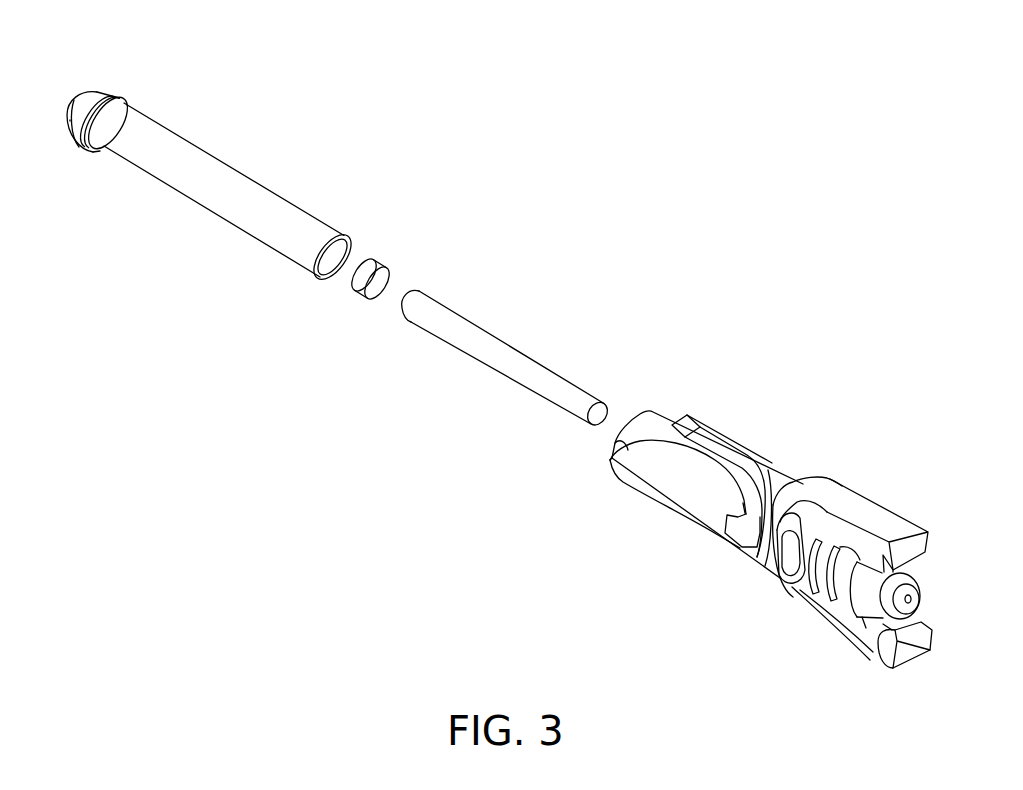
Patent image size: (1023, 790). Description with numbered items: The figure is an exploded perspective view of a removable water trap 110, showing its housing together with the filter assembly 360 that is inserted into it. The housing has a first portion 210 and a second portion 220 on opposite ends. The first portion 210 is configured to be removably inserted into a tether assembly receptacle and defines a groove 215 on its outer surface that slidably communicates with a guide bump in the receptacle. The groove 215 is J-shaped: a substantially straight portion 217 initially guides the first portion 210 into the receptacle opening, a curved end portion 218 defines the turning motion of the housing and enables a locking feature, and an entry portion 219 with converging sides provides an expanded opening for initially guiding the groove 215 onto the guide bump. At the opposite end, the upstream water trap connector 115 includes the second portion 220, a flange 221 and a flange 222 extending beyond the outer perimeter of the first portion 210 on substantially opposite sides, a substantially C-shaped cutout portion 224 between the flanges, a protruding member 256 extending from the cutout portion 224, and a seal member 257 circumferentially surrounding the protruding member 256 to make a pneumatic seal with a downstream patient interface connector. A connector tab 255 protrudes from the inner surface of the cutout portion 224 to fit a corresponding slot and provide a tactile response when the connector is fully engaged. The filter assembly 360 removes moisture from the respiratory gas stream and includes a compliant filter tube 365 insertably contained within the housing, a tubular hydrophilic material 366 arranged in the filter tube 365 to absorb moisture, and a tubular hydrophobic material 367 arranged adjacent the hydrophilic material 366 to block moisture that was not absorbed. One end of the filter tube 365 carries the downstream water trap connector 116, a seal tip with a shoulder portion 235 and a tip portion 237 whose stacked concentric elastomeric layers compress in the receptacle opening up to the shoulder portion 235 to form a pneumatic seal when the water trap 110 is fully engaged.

The water trap 110 is at (673, 358).
The upstream water trap connector 115 is at (937, 560).
The downstream water trap connector 116 is at (71, 145).
The first portion 210 is at (778, 480).
The groove 215 is at (743, 483).
The straight portion 217 is at (708, 453).
The curved end portion 218 is at (742, 540).
The entry portion 219 is at (613, 445).
The second portion 220 is at (843, 524).
The flange 221 is at (893, 522).
The flange 222 is at (880, 662).
The cutout portion 224 is at (875, 633).
The shoulder portion 235 is at (117, 93).
The tip portion 237 is at (80, 94).
The connector tab 255 is at (917, 615).
The protruding member 256 is at (867, 593).
The seal member 257 is at (917, 577).
The filter assembly 360 is at (252, 447).
The filter tube 365 is at (206, 165).
The hydrophilic material 366 is at (500, 346).
The hydrophobic material 367 is at (373, 265).